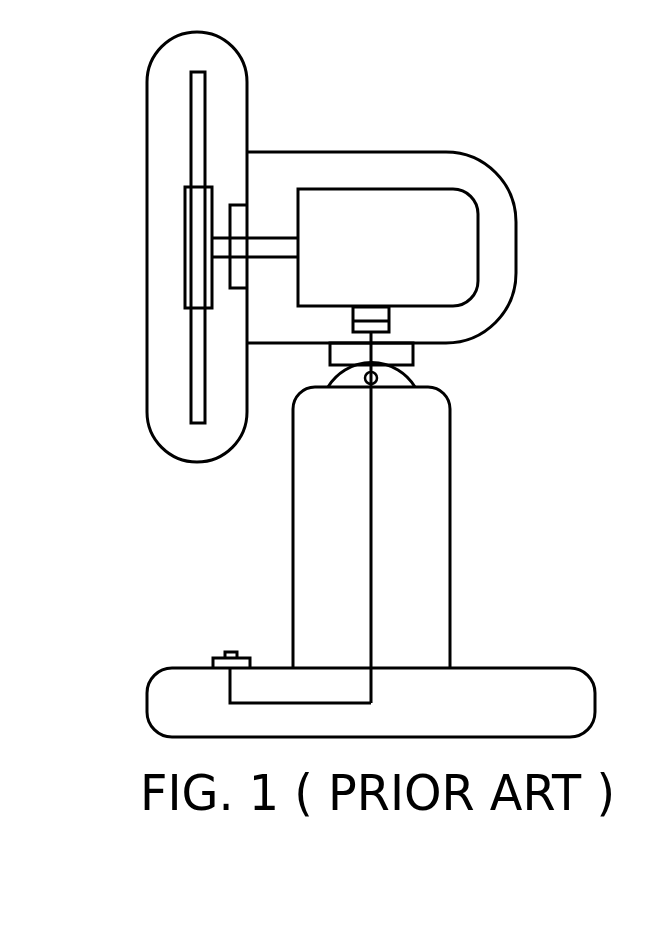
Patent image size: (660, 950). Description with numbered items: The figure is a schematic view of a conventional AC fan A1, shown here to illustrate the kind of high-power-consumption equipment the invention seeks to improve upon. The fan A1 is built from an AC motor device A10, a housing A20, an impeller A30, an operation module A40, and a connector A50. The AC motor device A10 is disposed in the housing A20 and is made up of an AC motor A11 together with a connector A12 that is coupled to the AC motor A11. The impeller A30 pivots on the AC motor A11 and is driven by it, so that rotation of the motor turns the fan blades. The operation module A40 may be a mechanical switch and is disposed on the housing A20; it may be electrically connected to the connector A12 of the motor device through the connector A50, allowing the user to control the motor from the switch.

The conventional AC fan A1 is at (637, 57).
The AC motor device A10 is at (488, 200).
The AC motor A11 is at (462, 252).
The connector A12 is at (377, 313).
The housing A20 is at (467, 552).
The impeller A30 is at (178, 160).
The operation module A40 is at (223, 642).
The connector A50 is at (377, 325).